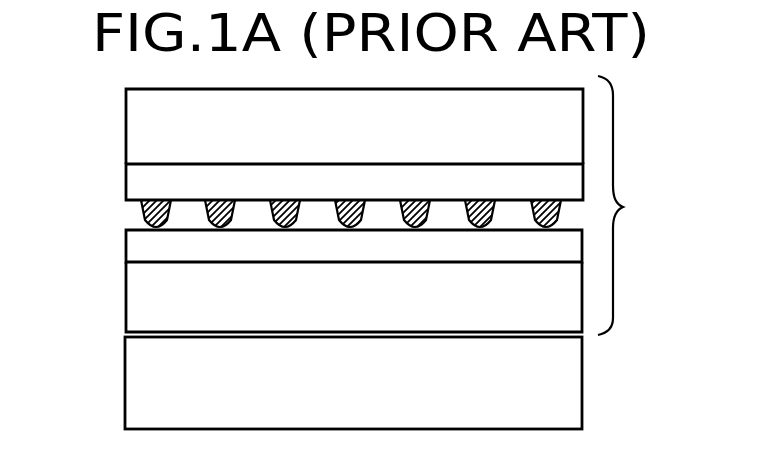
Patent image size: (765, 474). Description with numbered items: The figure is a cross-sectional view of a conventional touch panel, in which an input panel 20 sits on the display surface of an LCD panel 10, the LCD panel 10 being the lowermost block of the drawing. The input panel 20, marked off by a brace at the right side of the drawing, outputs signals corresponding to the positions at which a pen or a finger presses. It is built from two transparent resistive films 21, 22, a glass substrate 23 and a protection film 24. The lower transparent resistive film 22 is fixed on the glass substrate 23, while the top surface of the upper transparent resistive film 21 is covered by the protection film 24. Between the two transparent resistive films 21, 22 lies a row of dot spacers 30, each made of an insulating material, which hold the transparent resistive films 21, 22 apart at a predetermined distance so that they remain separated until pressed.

The liquid crystal display panel 10 is at (572, 393).
The input panel 20 is at (623, 207).
The transparent resistive film 21 is at (125, 178).
The transparent resistive film 22 is at (125, 252).
The glass substrate 23 is at (125, 300).
The protection film 24 is at (125, 130).
The dot spacers 30 is at (140, 212).